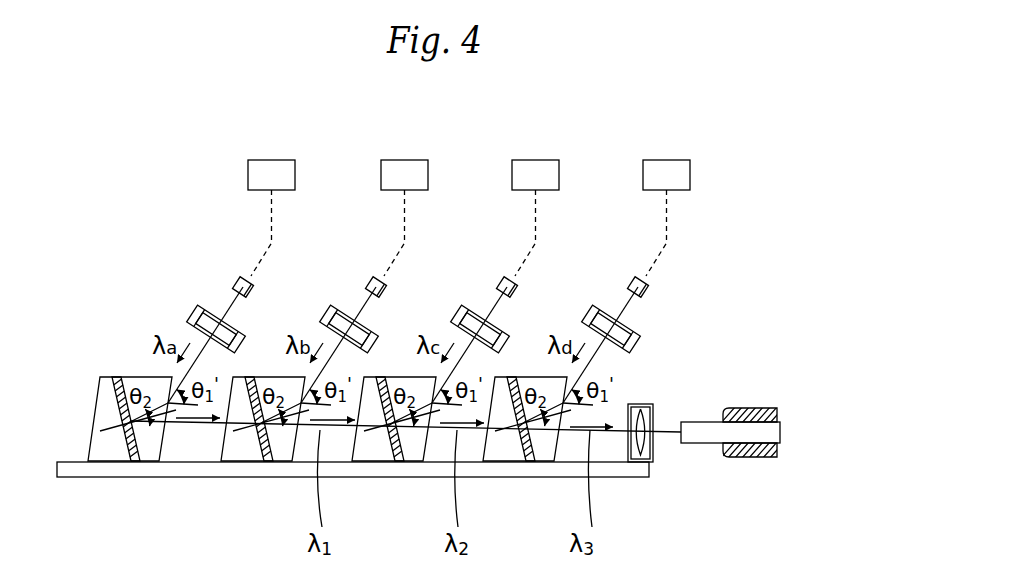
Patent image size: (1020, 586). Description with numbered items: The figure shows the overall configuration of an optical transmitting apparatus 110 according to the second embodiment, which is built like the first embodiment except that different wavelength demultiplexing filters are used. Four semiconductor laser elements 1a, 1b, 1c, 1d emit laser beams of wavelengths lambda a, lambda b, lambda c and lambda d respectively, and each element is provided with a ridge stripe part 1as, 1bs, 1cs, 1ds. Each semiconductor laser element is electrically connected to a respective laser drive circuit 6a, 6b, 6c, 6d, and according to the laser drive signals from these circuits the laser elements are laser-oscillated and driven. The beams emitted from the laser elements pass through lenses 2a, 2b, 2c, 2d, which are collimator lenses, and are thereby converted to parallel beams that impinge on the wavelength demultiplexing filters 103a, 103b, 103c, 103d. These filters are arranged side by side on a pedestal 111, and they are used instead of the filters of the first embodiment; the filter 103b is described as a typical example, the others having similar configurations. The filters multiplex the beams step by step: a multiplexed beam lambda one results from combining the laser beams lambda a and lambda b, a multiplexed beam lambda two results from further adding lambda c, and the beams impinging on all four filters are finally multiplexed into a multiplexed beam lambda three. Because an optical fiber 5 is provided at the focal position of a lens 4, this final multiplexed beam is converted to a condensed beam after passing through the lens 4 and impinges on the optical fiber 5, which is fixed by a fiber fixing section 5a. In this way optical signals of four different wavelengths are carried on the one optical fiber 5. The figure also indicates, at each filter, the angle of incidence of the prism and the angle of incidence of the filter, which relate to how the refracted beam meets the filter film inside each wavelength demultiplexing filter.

The optical transmitting apparatus 110 is at (120, 155).
The pedestal 111 is at (245, 478).
The semiconductor laser element 1a is at (271, 214).
The semiconductor laser element 1b is at (356, 233).
The semiconductor laser element 1c is at (487, 233).
The semiconductor laser element 1d is at (618, 233).
The ridge stripe part 1as is at (247, 276).
The ridge stripe part 1bs is at (371, 260).
The ridge stripe part 1cs is at (501, 260).
The ridge stripe part 1ds is at (633, 260).
The lens 2a is at (199, 314).
The lens 2b is at (333, 305).
The lens 2c is at (464, 305).
The lens 2d is at (595, 305).
The wavelength demultiplexing filter 103a is at (104, 377).
The wavelength demultiplexing filter 103b is at (276, 382).
The wavelength demultiplexing filter 103c is at (407, 382).
The wavelength demultiplexing filter 103d is at (538, 382).
The lens 4 is at (640, 463).
The optical fiber 5 is at (706, 444).
The fiber fixing section 5a is at (777, 411).
The laser drive circuit 6a is at (257, 160).
The laser drive circuit 6b is at (404, 153).
The laser drive circuit 6c is at (535, 153).
The laser drive circuit 6d is at (666, 153).